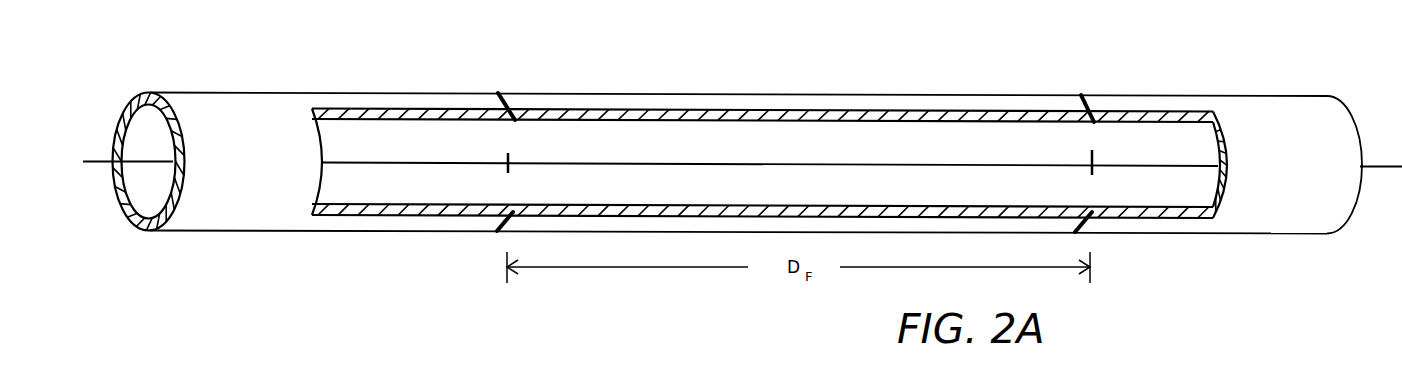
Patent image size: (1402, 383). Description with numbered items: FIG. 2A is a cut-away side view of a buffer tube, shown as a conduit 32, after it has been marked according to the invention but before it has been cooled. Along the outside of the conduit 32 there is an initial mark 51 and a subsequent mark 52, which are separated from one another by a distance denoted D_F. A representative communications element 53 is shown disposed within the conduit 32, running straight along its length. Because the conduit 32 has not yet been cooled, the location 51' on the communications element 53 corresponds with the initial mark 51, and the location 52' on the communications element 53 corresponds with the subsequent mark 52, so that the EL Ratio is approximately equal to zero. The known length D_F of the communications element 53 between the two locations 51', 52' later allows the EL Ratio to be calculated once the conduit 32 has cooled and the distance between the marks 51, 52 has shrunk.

The conduit 32 is at (253, 102).
The communications element 53 is at (95, 161).
The subsequent mark 52 is at (543, 137).
The initial mark 51 is at (1114, 138).
The location 52' is at (546, 151).
The location 51' is at (1124, 155).